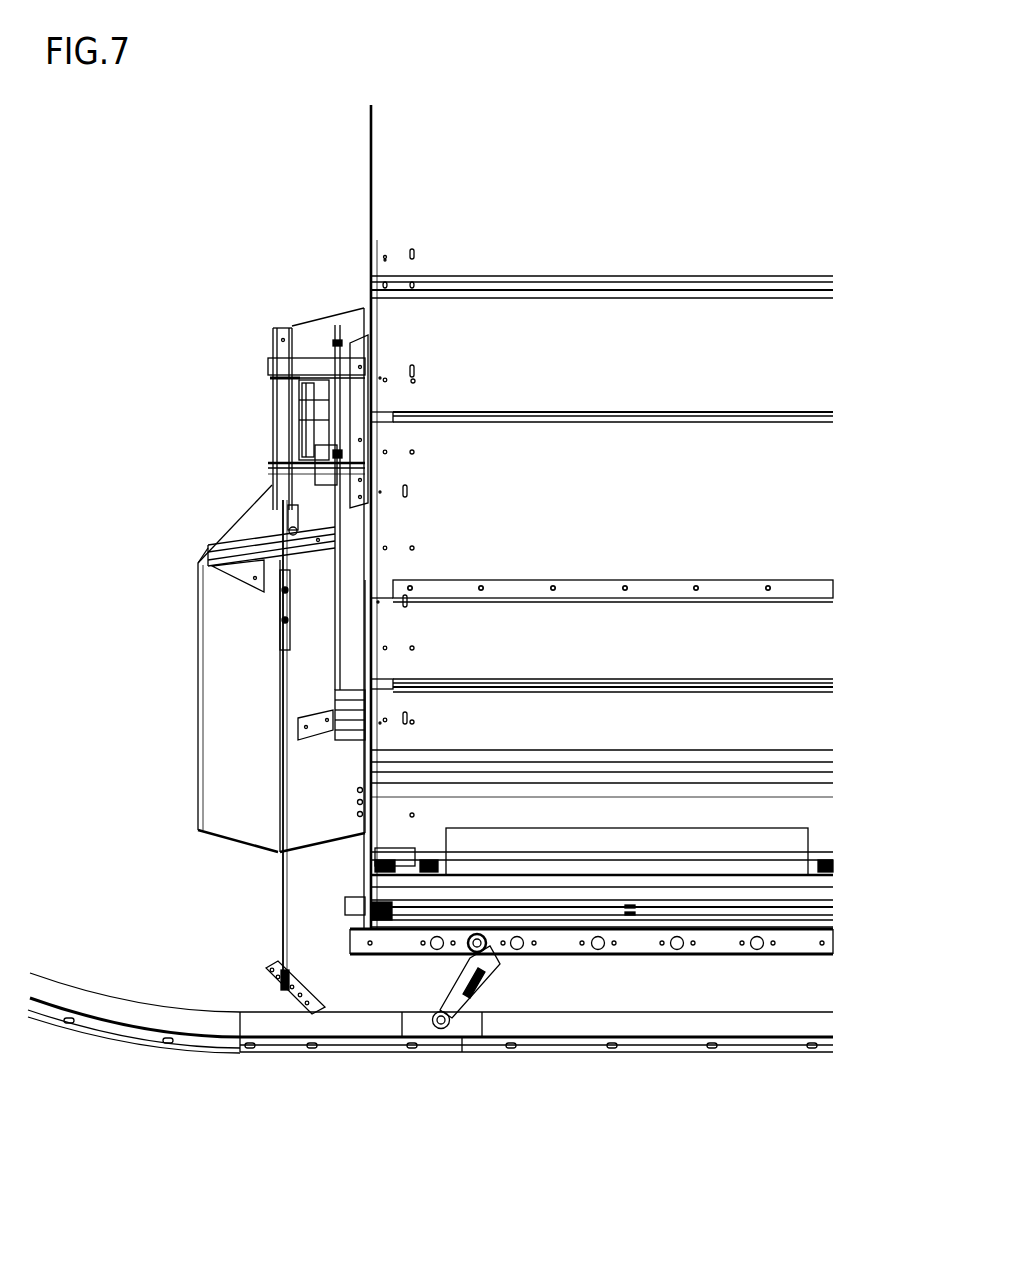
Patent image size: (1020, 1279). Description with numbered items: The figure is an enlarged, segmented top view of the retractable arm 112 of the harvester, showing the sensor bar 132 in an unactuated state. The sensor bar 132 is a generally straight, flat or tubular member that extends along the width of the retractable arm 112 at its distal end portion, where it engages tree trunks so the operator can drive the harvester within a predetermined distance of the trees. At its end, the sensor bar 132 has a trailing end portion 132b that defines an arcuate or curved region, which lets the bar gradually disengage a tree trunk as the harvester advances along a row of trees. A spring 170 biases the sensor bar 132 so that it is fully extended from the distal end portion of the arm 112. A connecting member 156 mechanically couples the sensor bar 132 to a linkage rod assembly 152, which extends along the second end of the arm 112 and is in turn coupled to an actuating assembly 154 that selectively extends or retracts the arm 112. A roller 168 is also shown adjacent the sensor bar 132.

The retractable arm 112 is at (312, 186).
The actuating assembly 154 is at (272, 452).
The linkage rod assembly 152 is at (283, 907).
The connecting member 156 is at (267, 972).
The trailing end portion 132b is at (92, 1035).
The sensor bar 132 is at (628, 1050).
The spring 170 is at (475, 989).
The roller 168 is at (447, 1023).